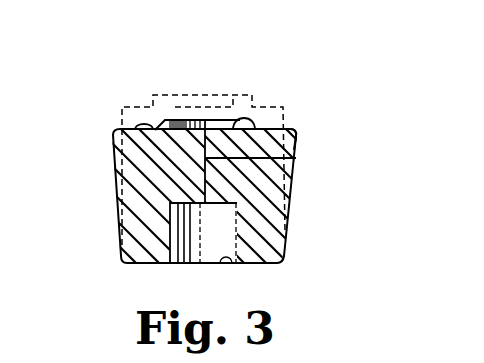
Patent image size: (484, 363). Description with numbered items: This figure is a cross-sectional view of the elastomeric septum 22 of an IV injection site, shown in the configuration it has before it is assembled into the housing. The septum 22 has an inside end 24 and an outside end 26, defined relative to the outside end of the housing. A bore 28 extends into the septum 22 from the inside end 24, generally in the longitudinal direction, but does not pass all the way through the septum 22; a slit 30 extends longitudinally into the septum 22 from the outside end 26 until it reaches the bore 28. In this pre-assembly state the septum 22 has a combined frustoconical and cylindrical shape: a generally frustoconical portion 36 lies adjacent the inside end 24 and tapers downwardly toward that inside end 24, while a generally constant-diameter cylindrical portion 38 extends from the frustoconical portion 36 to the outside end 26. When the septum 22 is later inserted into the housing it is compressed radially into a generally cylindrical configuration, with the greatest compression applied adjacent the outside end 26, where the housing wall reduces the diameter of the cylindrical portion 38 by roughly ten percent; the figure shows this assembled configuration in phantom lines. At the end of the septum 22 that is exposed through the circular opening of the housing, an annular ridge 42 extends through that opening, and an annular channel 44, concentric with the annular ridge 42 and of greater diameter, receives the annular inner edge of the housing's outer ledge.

The septum 22 is at (275, 60).
The inside end 24 is at (153, 265).
The outside end 26 is at (218, 129).
The bore 28 is at (203, 251).
The slit 30 is at (296, 159).
The frustoconical portion 36 is at (287, 233).
The cylindrical portion 38 is at (298, 145).
The annular ridge 42 is at (165, 122).
The annular channel 44 is at (152, 126).